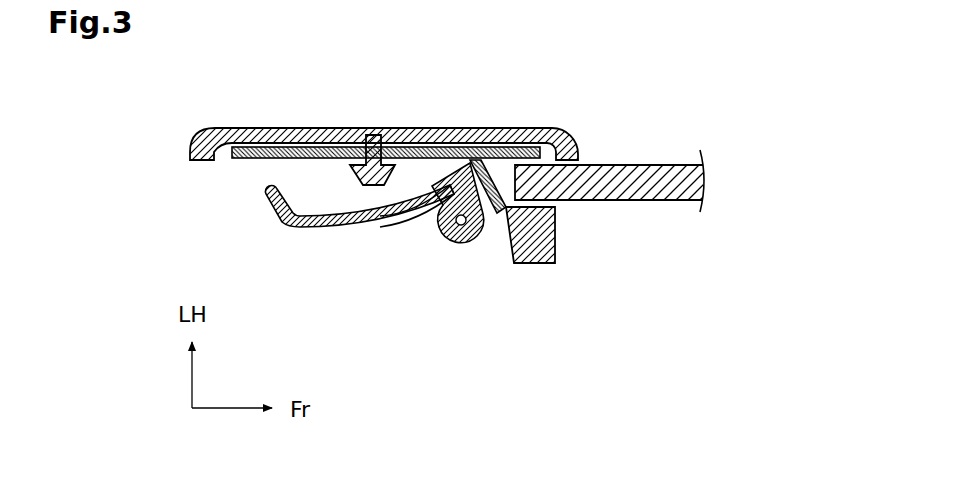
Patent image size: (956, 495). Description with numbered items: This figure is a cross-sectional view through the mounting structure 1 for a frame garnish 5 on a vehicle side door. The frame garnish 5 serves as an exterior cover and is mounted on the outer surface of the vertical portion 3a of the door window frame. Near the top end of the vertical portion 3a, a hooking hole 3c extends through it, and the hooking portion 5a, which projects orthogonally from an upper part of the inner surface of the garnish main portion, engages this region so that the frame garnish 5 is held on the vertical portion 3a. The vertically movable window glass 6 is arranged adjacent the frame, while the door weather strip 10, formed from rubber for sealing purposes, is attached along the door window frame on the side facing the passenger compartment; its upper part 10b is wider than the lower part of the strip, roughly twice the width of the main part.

The mounting structure 1 is at (594, 87).
The vertical portion 3a is at (425, 147).
The hooking hole 3c is at (374, 135).
The frame garnish 5 is at (293, 128).
The hooking portion 5a is at (372, 224).
The window glass 6 is at (640, 190).
The door weather strip 10 is at (476, 245).
The upper part 10b is at (418, 212).